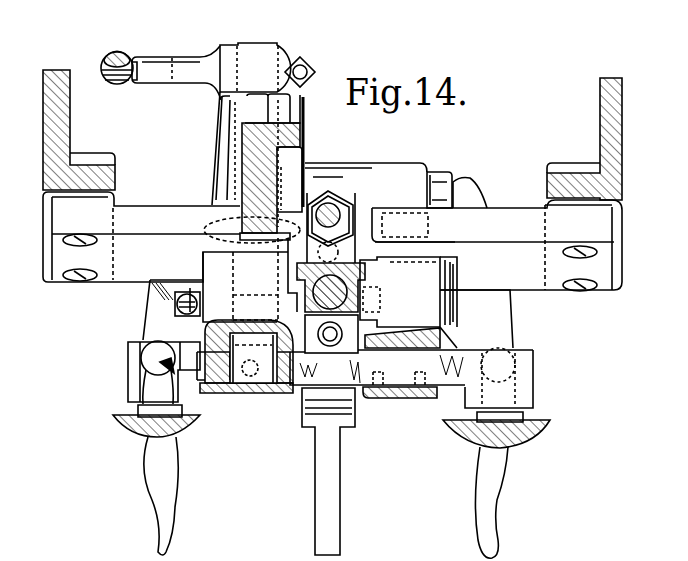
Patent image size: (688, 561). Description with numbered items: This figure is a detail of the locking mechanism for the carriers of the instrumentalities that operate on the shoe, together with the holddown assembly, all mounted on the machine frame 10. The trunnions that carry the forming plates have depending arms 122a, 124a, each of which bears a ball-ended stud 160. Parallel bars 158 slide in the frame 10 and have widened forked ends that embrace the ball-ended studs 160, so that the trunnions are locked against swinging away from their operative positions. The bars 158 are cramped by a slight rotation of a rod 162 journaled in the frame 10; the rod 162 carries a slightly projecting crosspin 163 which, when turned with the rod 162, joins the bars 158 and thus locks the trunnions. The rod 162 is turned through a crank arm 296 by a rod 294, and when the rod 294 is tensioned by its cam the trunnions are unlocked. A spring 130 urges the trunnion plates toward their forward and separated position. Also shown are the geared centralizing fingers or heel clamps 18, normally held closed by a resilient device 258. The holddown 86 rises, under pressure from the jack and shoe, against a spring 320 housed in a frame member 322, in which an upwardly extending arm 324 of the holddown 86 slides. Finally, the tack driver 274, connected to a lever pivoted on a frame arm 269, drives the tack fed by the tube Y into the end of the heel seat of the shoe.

The machine frame 10 is at (623, 162).
The centralizing fingers 18 is at (222, 165).
The holddown 86 is at (337, 472).
The depending arm 122a is at (552, 430).
The depending arm 124a is at (133, 422).
The spring 130 is at (170, 308).
The parallel bars 158 is at (130, 370).
The ball-ended studs 160 is at (148, 356).
The rod 162 is at (273, 44).
The crosspin 163 is at (243, 393).
The resilient device 258 is at (232, 168).
The frame arm 269 is at (252, 180).
The tack driver 274 is at (345, 296).
The rod 294 is at (126, 54).
The crank arm 296 is at (195, 60).
The spring 320 is at (345, 247).
The frame member 322 is at (492, 213).
The upwardly extending arm 324 is at (382, 238).
The tube Y is at (360, 324).